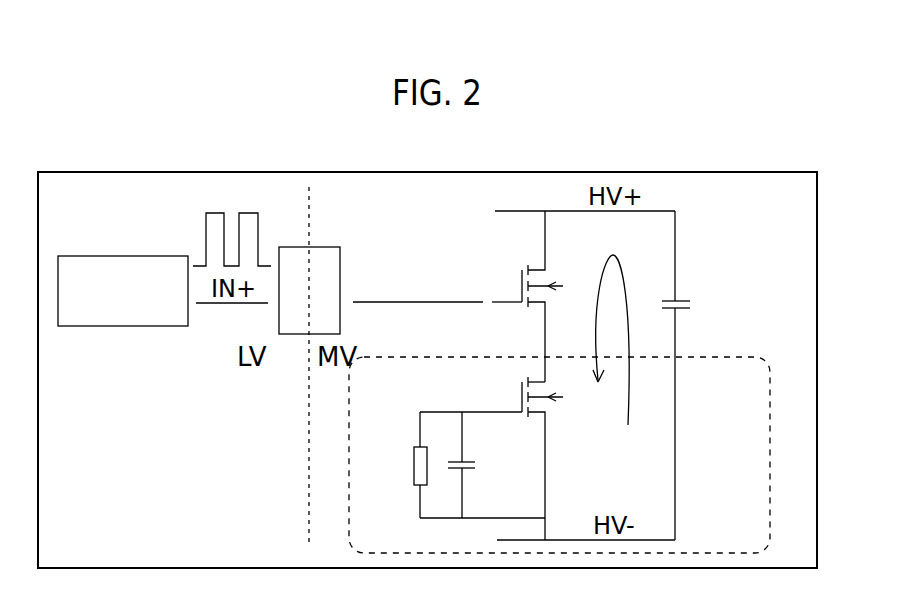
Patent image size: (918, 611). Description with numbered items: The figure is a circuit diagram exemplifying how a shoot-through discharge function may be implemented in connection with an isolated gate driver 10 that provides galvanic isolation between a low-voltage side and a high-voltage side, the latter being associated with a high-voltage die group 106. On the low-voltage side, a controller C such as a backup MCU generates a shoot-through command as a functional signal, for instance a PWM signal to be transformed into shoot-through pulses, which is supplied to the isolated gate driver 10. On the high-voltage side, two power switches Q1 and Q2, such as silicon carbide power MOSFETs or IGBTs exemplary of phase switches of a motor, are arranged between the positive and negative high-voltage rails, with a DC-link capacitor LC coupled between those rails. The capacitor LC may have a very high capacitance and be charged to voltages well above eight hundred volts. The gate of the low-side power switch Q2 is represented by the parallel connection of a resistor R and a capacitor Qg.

The high-voltage die group 106 is at (632, 134).
The isolated gate driver 10 is at (330, 233).
The controller C is at (127, 316).
The power switch Q1 is at (545, 261).
The power switch Q2 is at (548, 403).
The resistor R is at (413, 469).
The capacitor Qg is at (468, 472).
The capacitor LC is at (696, 305).